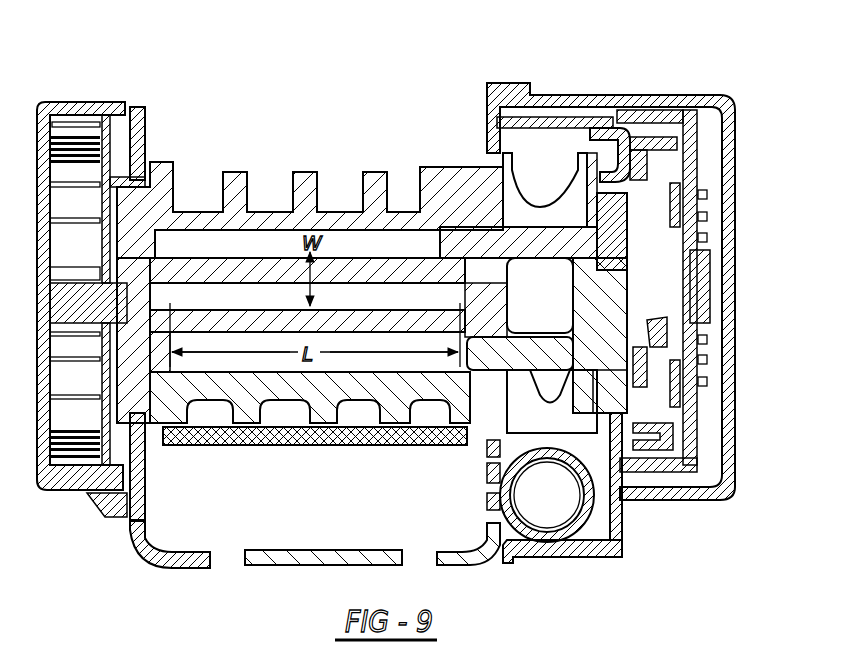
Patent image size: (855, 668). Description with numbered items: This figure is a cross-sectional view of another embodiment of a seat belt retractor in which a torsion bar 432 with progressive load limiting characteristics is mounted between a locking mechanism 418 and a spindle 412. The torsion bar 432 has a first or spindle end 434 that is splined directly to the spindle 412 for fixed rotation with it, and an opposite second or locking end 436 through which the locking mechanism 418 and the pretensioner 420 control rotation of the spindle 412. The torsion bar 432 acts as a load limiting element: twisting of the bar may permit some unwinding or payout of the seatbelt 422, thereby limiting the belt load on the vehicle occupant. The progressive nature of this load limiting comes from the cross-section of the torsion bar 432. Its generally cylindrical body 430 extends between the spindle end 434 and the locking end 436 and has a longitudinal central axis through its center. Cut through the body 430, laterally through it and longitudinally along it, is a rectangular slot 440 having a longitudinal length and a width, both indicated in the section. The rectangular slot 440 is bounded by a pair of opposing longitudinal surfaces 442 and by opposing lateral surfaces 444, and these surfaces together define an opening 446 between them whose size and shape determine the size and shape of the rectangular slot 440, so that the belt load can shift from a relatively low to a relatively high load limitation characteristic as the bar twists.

The spindle 412 is at (305, 210).
The locking mechanism 418 is at (703, 227).
The pretensioner 420 is at (593, 140).
The seatbelt 422 is at (313, 445).
The body 430 is at (350, 275).
The torsion bar 432 is at (268, 243).
The spindle end 434 is at (150, 297).
The locking end 436 is at (478, 292).
The rectangular slot 440 is at (362, 302).
The longitudinal surfaces 442 is at (180, 306).
The lateral surfaces 444 is at (180, 297).
The opening 446 is at (212, 302).